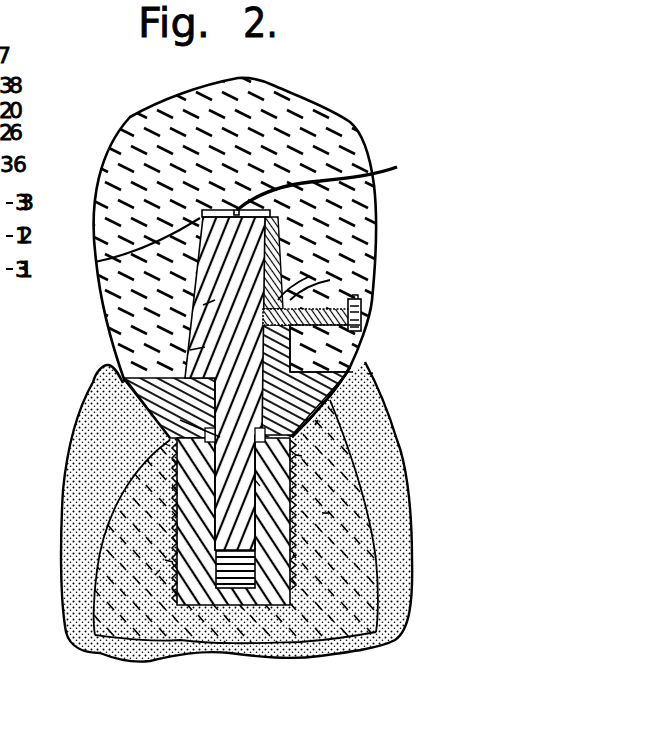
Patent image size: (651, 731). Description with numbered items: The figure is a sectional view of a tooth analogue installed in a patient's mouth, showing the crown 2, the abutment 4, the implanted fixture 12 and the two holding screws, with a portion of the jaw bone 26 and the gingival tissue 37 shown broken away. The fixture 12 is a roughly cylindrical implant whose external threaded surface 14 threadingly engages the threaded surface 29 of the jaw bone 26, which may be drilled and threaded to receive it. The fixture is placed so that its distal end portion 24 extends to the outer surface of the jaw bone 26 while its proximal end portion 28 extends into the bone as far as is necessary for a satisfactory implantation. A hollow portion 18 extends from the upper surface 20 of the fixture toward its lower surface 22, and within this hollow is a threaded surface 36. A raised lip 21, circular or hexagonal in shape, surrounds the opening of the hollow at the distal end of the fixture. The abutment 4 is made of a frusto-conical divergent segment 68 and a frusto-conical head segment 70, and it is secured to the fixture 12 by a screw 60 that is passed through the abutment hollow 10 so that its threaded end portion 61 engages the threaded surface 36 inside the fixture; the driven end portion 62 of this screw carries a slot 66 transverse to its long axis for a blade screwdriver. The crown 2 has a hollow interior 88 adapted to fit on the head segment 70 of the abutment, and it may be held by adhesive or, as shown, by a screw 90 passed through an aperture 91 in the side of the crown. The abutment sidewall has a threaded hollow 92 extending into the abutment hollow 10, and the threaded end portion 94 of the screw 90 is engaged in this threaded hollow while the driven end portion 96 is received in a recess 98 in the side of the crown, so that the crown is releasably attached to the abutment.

The crown 2 is at (369, 131).
The abutment 4 is at (120, 384).
The abutment hollow 10 is at (200, 280).
The fixture 12 is at (328, 549).
The threaded surface 14 is at (177, 476).
The hollow portion 18 is at (243, 580).
The upper surface 20 is at (330, 418).
The raised lip 21 is at (180, 420).
The lower surface 22 is at (233, 580).
The distal end portion 24 is at (163, 443).
The jaw bone 26 is at (302, 456).
The proximal end portion 28 is at (160, 572).
The threaded surface 29 is at (173, 562).
The threaded surface 36 is at (268, 486).
The gingival tissue 37 is at (373, 373).
The screw 60 is at (280, 272).
The threaded end portion 61 is at (330, 513).
The driven end portion 62 is at (100, 262).
The slot 66 is at (397, 167).
The divergent segment 68 is at (315, 425).
The head segment 70 is at (203, 305).
The hollow interior 88 is at (190, 350).
The screw 90 is at (302, 302).
The aperture 91 is at (330, 280).
The threaded hollow 92 is at (310, 276).
The threaded end portion 94 is at (362, 343).
The driven end portion 96 is at (360, 312).
The recess 98 is at (366, 300).